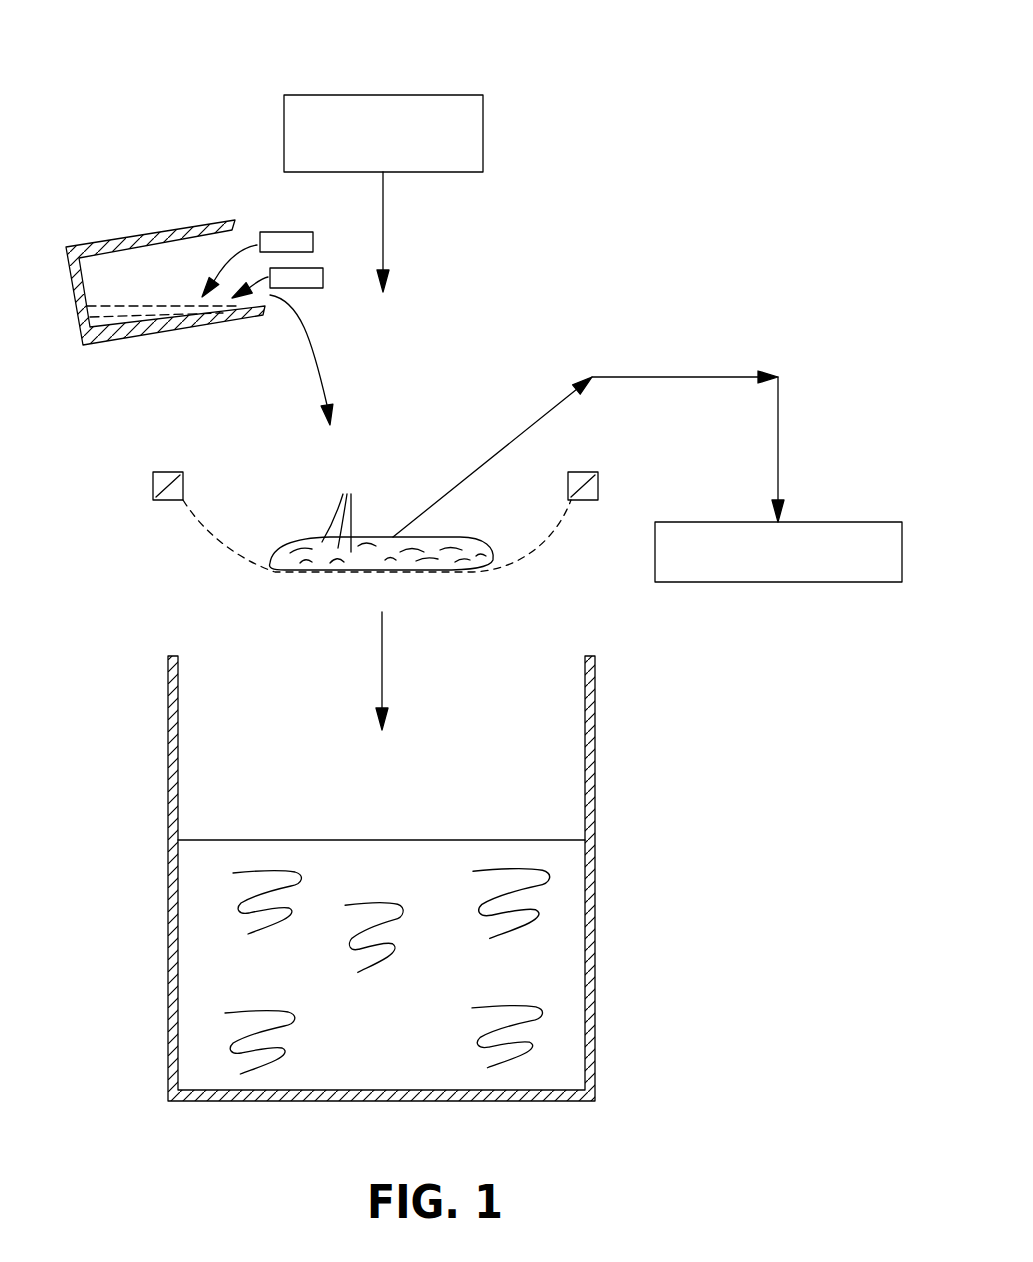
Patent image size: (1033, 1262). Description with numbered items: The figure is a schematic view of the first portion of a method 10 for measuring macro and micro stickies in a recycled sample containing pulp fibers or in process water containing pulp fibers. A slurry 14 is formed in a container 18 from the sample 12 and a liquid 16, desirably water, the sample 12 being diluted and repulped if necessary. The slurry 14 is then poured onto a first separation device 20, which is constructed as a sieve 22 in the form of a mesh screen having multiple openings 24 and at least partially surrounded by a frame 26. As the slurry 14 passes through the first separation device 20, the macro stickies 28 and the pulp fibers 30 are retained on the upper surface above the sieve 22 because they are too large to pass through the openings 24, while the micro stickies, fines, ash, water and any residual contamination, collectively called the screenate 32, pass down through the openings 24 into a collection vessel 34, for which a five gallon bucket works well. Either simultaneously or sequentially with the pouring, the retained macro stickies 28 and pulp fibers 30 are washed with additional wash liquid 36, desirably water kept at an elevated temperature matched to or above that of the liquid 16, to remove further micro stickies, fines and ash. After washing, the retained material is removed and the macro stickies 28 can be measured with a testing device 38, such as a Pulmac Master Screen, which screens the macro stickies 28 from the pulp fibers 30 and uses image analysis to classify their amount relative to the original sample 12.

The method 10 is at (644, 59).
The sample 12 is at (295, 232).
The slurry 14 is at (105, 300).
The liquid 16 is at (327, 278).
The container 18 is at (130, 235).
The first separation device 20 is at (586, 438).
The sieve 22 is at (203, 533).
The openings 24 is at (203, 535).
The frame 26 is at (167, 472).
The macro stickies 28 is at (341, 506).
The pulp fibers 30 is at (370, 538).
The screenate 32 is at (371, 1020).
The collection vessel 34 is at (596, 887).
The additional wash liquid 36 is at (365, 147).
The testing device 38 is at (761, 566).